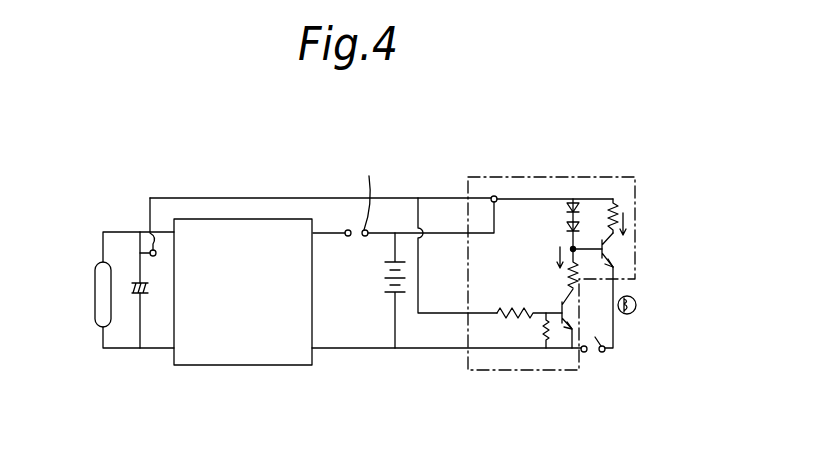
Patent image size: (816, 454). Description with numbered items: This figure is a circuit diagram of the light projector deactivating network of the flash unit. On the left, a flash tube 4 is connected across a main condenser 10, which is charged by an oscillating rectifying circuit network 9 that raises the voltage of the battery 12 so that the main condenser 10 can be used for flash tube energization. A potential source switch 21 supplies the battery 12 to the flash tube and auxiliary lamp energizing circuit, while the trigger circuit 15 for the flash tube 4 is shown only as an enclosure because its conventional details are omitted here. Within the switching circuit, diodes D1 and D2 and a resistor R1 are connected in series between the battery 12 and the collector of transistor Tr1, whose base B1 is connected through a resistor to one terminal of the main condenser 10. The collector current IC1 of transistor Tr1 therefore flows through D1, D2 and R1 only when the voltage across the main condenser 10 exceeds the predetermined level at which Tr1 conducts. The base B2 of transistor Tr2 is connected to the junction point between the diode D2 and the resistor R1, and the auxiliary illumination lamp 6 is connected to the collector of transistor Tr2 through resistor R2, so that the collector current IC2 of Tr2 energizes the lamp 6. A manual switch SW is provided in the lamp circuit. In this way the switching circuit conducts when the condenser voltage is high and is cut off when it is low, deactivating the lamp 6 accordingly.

The flash tube 4 is at (98, 312).
The main condenser 10 is at (136, 296).
The oscillating rectifying circuit network 9 is at (262, 352).
The potential source switch 21 is at (363, 190).
The battery 12 is at (384, 263).
The trigger circuit 15 is at (483, 362).
The diode D1 is at (575, 216).
The diode D2 is at (574, 247).
The base of transistor Tr2 B2 is at (590, 234).
The transistor Tr2 is at (612, 257).
The resistor R2 is at (615, 213).
The collector current of transistor Tr2 IC2 is at (637, 226).
The collector current of transistor Tr1 IC1 is at (549, 257).
The resistor R1 is at (568, 283).
The transistor Tr1 is at (557, 305).
The base of transistor Tr1 B1 is at (562, 310).
The manual switch SW is at (599, 360).
The auxiliary illumination lamp 6 is at (638, 305).